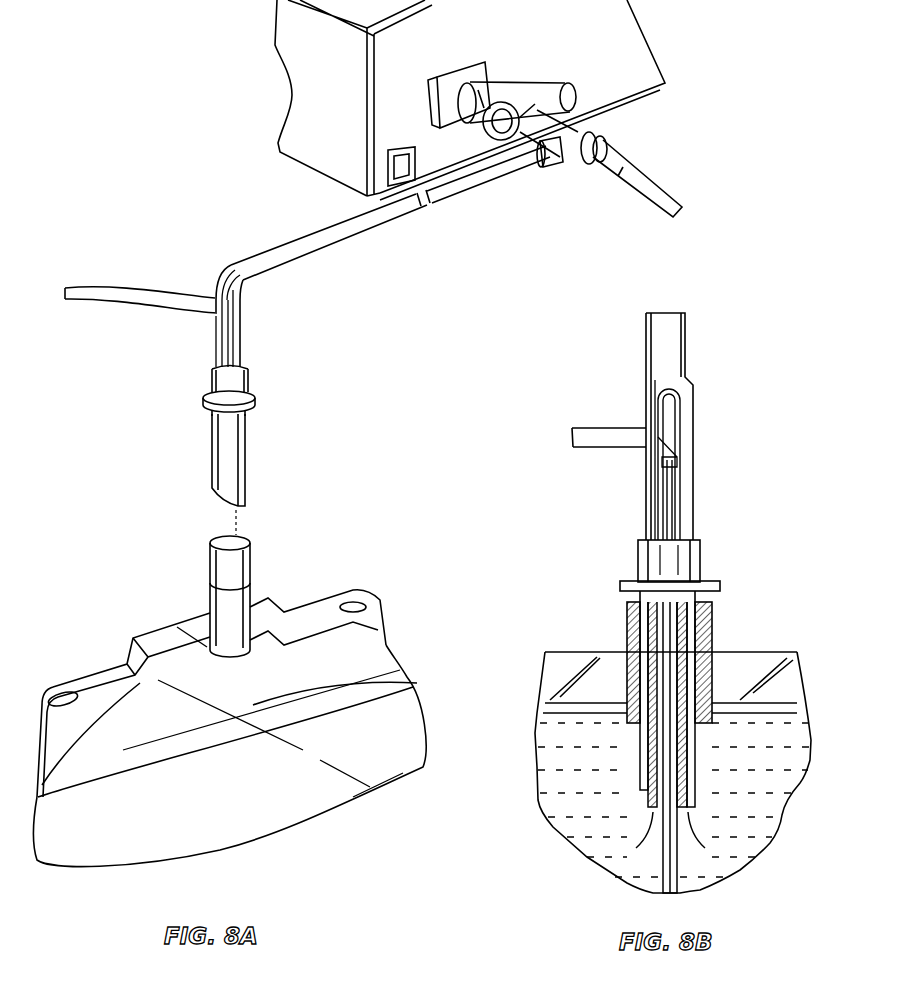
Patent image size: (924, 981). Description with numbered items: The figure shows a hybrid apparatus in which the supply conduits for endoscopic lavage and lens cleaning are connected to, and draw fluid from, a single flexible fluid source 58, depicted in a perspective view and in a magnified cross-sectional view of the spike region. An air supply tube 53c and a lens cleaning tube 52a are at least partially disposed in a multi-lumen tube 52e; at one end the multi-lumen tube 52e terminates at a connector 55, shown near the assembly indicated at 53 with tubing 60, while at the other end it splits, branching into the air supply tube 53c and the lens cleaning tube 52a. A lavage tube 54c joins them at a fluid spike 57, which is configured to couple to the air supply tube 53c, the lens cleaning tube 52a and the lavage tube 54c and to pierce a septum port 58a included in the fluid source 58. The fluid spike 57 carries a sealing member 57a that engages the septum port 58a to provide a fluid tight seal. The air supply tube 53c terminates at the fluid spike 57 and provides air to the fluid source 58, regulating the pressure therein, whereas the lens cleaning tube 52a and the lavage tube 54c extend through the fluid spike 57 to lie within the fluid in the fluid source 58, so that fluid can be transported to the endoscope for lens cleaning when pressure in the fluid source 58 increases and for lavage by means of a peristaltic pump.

In FIG. 8A, the connector assembly 53 is at (623, 128).
In FIG. 8A, the connector 55 is at (550, 162).
In FIG. 8A, the tubing 60 is at (663, 192).
In FIG. 8A, the multi-lumen tube 52e is at (302, 248).
In FIG. 8B, the multi-lumen tube 52e is at (668, 347).
In FIG. 8A, the lens cleaning tube 52a is at (217, 295).
In FIG. 8B, the lens cleaning tube 52a is at (648, 413).
In FIG. 8A, the air supply tube 53c is at (233, 308).
In FIG. 8B, the air supply tube 53c is at (683, 432).
In FIG. 8A, the lavage tube 54c is at (140, 298).
In FIG. 8B, the lavage tube 54c is at (600, 440).
In FIG. 8A, the sealing member 57a is at (248, 408).
In FIG. 8B, the sealing member 57a is at (630, 597).
In FIG. 8A, the fluid spike 57 is at (220, 503).
In FIG. 8B, the fluid spike 57 is at (695, 790).
In FIG. 8A, the septum port 58a is at (240, 533).
In FIG. 8B, the septum port 58a is at (703, 597).
In FIG. 8A, the fluid source 58 is at (343, 647).
In FIG. 8B, the fluid source 58 is at (770, 687).